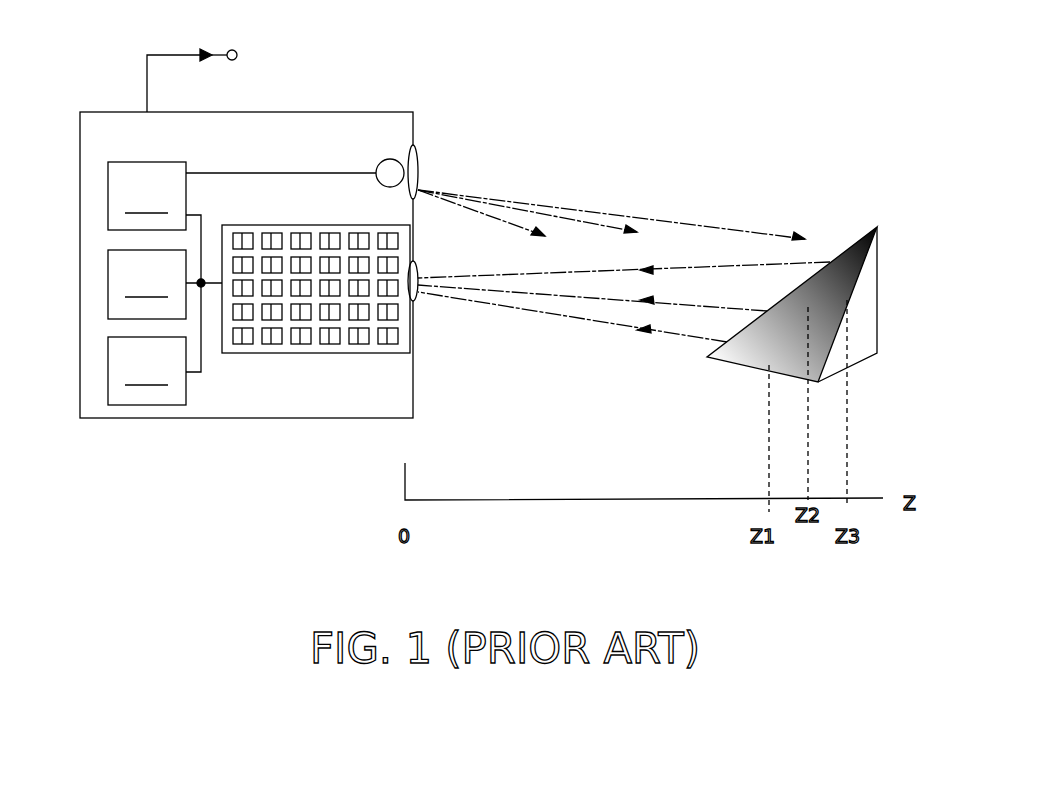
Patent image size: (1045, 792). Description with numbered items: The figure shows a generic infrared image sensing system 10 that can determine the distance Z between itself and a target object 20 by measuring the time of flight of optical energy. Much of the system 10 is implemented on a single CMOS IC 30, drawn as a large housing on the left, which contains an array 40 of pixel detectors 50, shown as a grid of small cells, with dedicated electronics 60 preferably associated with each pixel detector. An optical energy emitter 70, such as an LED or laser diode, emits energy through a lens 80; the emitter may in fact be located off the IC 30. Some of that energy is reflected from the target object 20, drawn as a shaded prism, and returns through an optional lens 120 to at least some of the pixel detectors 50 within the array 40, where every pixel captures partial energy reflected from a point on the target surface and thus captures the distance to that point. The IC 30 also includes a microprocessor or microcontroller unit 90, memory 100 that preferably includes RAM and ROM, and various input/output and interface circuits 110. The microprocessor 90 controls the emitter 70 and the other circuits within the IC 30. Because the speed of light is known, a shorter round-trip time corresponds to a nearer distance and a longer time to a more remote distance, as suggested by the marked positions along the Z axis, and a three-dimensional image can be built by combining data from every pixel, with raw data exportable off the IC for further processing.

The IR image sensing system 10 is at (380, 80).
The target object 20 is at (745, 358).
The CMOS IC 30 is at (250, 425).
The array 40 is at (302, 281).
The pixel detector 50 is at (335, 238).
The dedicated electronics 60 is at (240, 236).
The optical energy emitter 70 is at (374, 150).
The lens 80 is at (425, 157).
The microprocessor or microcontroller unit 90 is at (147, 284).
The memory 100 is at (147, 371).
The input/output and interface circuits 110 is at (147, 196).
The optional lens 120 is at (425, 302).